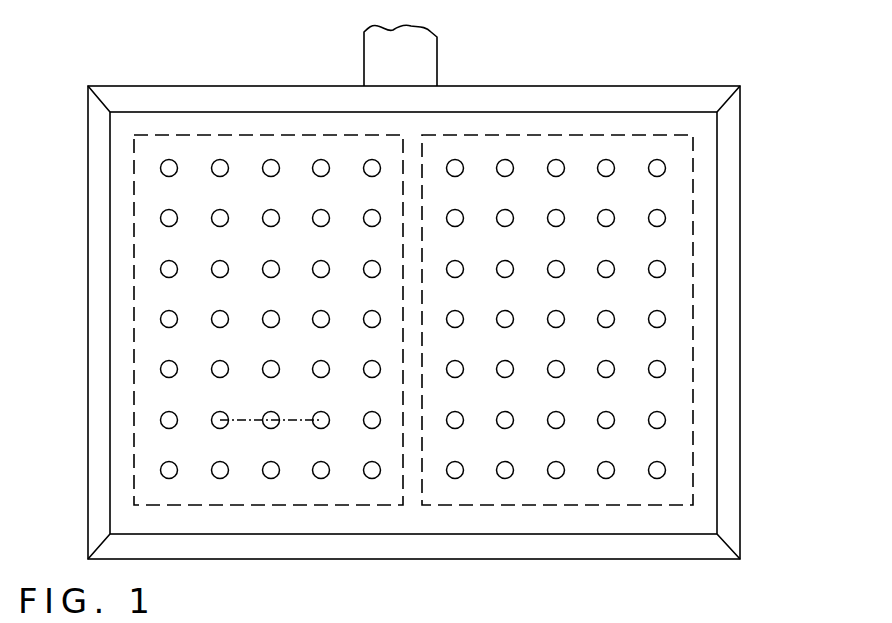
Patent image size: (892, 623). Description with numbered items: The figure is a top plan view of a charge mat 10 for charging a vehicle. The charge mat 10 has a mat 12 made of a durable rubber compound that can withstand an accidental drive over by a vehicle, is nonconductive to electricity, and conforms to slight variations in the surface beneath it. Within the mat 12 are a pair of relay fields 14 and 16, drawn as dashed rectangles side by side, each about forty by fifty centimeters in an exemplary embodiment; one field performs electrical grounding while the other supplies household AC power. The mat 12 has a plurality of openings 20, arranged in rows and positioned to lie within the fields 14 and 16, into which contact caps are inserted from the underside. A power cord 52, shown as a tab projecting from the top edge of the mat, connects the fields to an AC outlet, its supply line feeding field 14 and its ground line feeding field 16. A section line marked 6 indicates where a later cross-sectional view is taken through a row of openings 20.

The charge mat 10 is at (735, 51).
The mat 12 is at (418, 320).
The relay field 14 is at (693, 355).
The relay field 16 is at (135, 356).
The openings 20 is at (321, 161).
The power cord 52 is at (428, 43).
The section line 6- 6 is at (220, 370).